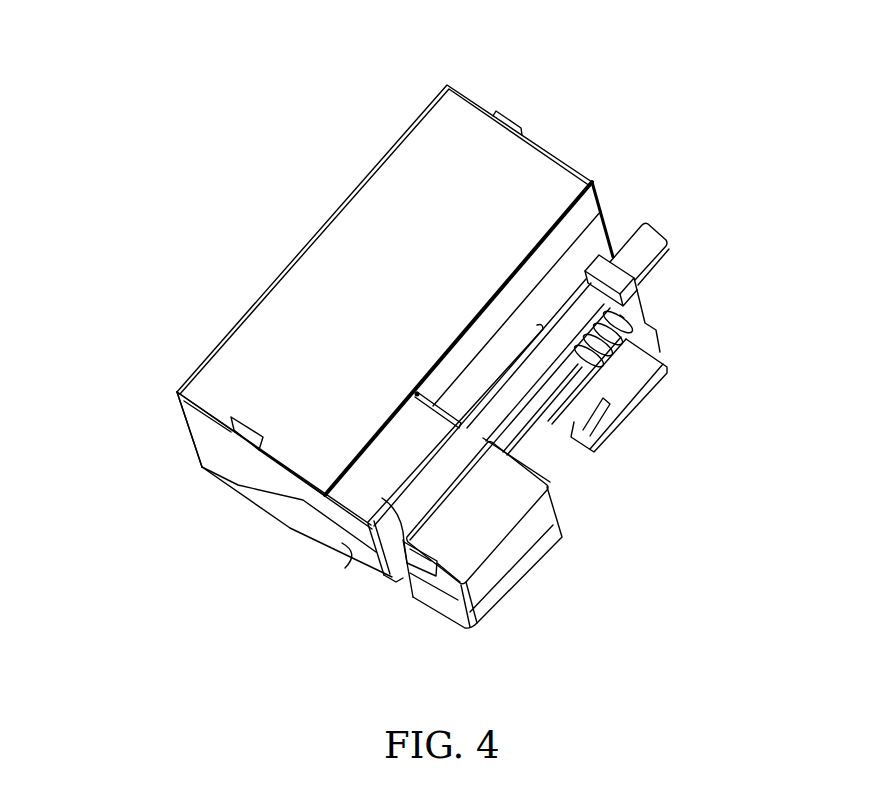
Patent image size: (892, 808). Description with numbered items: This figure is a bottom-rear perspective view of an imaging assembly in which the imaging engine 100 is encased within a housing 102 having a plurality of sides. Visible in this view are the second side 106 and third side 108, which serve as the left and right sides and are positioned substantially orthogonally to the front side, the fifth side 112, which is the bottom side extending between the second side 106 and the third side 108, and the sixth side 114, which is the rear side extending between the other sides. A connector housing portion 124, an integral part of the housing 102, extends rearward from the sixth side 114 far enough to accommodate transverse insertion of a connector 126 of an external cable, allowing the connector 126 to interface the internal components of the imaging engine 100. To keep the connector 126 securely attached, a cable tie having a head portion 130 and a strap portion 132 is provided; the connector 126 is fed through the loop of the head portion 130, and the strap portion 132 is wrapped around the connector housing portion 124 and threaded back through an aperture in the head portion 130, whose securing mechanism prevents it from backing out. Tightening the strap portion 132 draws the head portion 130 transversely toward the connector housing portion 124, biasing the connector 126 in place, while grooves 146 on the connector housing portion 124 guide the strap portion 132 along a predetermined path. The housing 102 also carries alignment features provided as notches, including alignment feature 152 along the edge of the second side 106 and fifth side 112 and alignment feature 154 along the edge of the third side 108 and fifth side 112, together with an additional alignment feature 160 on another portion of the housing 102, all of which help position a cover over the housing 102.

The imaging engine 100 is at (178, 78).
The housing 102 is at (197, 388).
The second side 106 is at (265, 532).
The third side 108 is at (572, 152).
The fifth side 112 is at (338, 258).
The sixth side 114 is at (585, 495).
The connector housing portion 124 is at (473, 538).
The connector 126 is at (585, 400).
The head portion 130 is at (676, 306).
The strap portion 132 is at (647, 233).
The grooves 146 is at (392, 588).
The alignment feature 152 is at (240, 435).
The alignment feature 154 is at (515, 129).
The additional alignment feature 160 is at (423, 566).